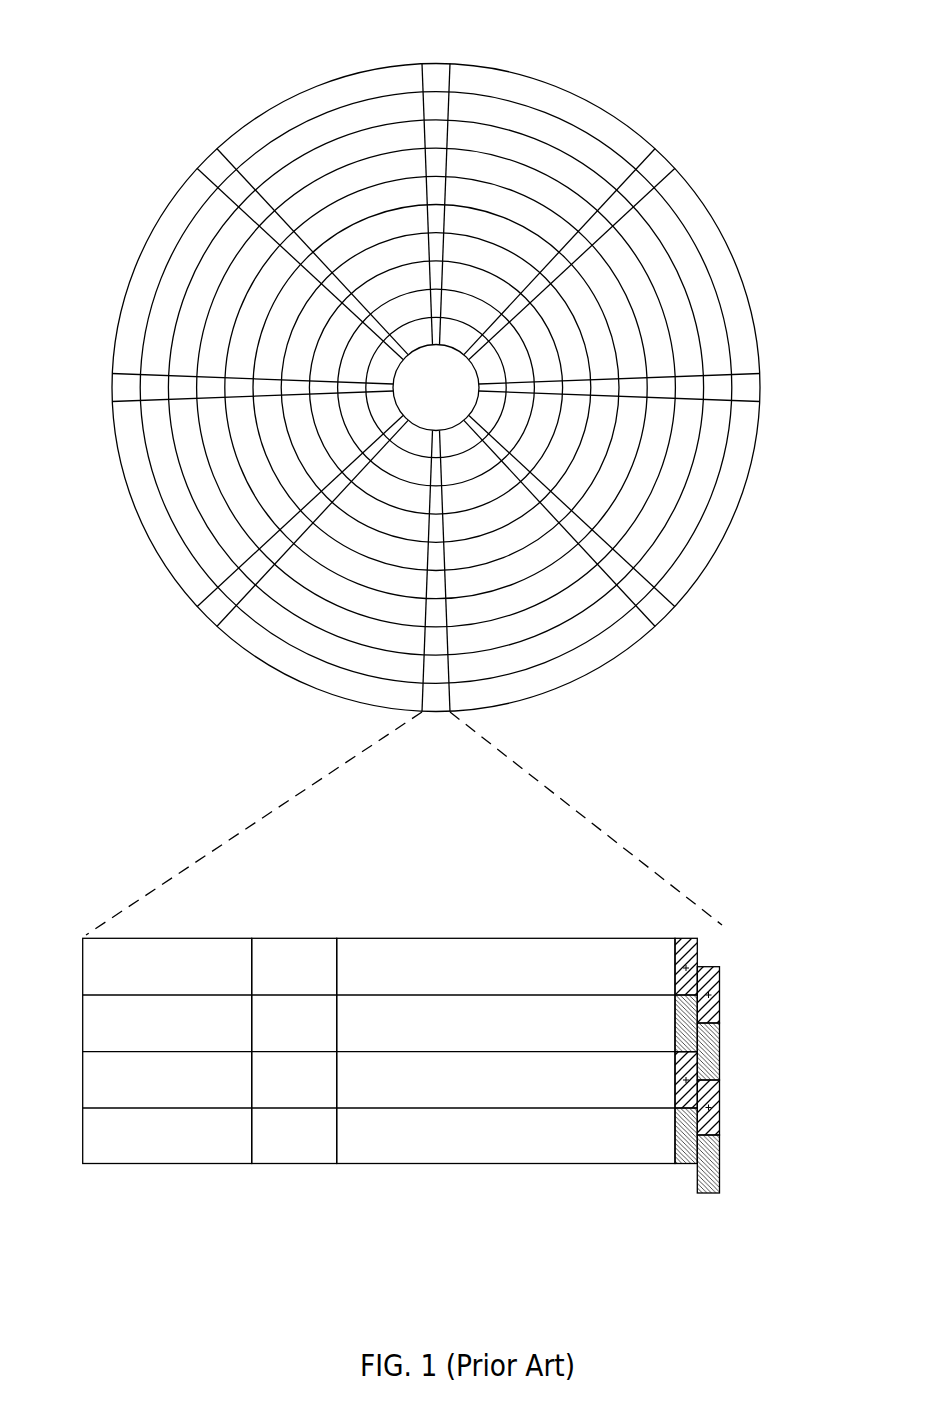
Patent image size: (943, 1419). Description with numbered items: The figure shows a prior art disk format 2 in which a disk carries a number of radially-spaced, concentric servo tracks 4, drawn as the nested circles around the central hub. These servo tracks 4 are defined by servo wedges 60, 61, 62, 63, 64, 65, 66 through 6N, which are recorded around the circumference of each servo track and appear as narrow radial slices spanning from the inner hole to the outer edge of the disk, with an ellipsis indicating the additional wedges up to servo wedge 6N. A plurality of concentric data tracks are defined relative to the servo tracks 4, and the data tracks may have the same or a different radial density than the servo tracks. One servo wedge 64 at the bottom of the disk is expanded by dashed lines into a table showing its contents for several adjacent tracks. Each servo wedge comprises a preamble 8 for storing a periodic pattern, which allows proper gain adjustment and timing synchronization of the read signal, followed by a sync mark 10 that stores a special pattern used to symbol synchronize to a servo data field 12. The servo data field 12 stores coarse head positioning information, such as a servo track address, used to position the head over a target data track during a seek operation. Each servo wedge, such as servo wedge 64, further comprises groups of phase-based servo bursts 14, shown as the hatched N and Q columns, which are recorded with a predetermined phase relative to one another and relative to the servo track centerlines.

The disk format 2 is at (198, 68).
The servo track 4 is at (549, 127).
The servo wedge 60 is at (437, 72).
The servo wedge 61 is at (657, 168).
The servo wedge 62 is at (752, 389).
The servo wedge 63 is at (657, 610).
The servo wedge 64 is at (288, 782).
The servo wedge 65 is at (212, 613).
The servo wedge 66 is at (118, 387).
The servo wedge 6N is at (213, 166).
The preamble 8 is at (174, 938).
The sync mark 10 is at (294, 938).
The servo data field 12 is at (491, 938).
The servo bursts 14 is at (714, 936).